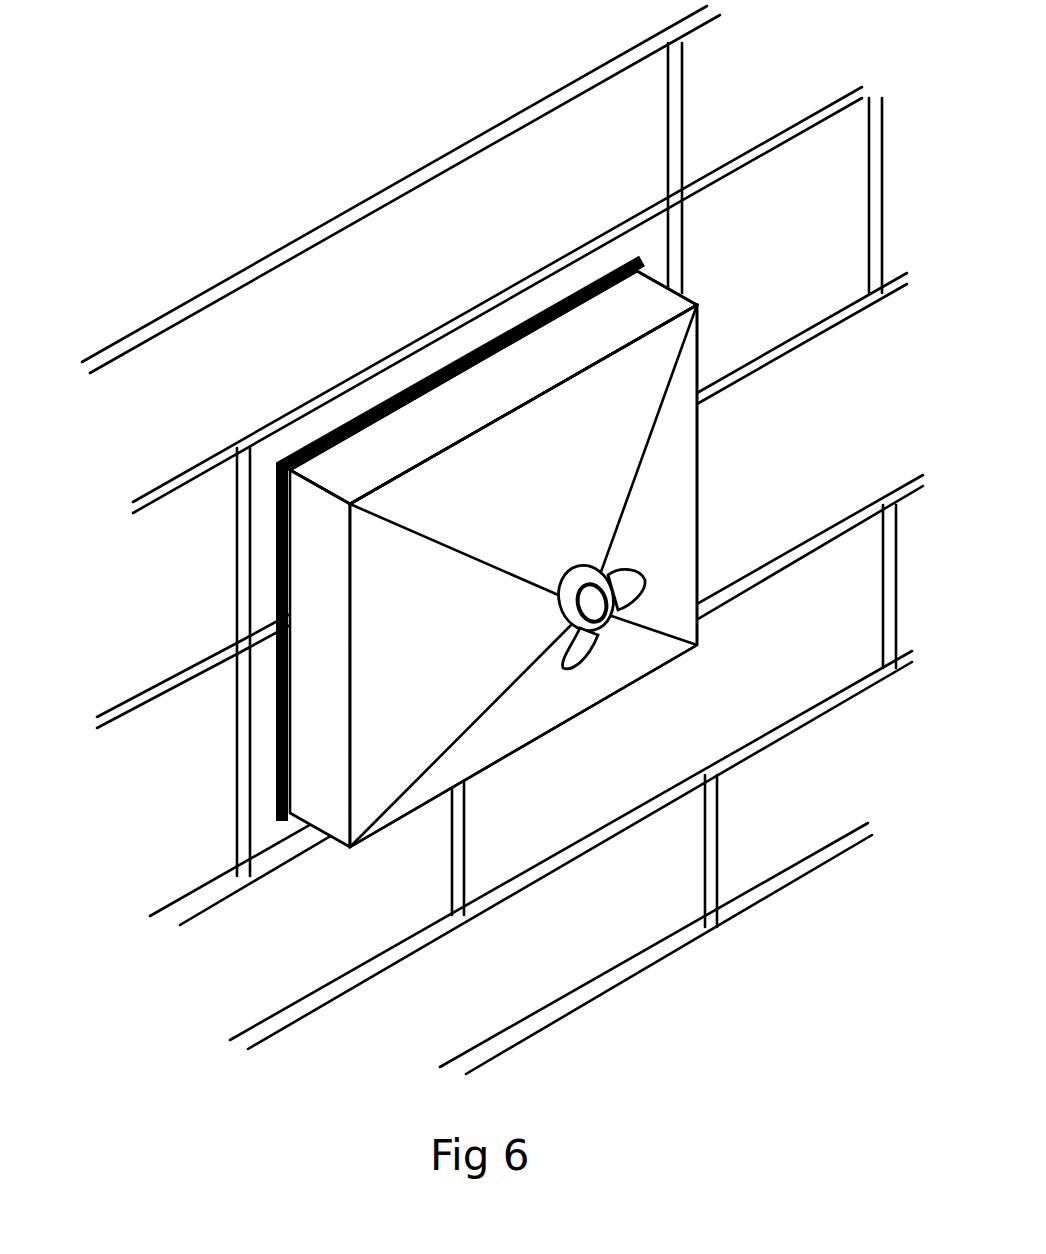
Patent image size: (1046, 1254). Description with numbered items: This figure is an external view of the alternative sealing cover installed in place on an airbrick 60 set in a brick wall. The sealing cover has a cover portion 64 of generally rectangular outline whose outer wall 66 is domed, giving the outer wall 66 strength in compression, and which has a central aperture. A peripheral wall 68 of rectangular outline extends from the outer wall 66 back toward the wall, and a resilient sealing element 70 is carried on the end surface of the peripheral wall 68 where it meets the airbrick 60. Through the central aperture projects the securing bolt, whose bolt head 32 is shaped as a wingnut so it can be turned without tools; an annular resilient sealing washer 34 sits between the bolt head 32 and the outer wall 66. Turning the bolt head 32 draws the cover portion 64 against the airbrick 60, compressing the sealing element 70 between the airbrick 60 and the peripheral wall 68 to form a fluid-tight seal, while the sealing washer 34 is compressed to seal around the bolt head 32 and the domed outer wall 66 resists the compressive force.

The bolt head 32 is at (636, 620).
The sealing washer 34 is at (560, 617).
The airbrick 60 is at (248, 580).
The cover portion 64 is at (700, 537).
The outer wall 66 is at (508, 515).
The peripheral wall 68 is at (403, 473).
The sealing element 70 is at (387, 400).